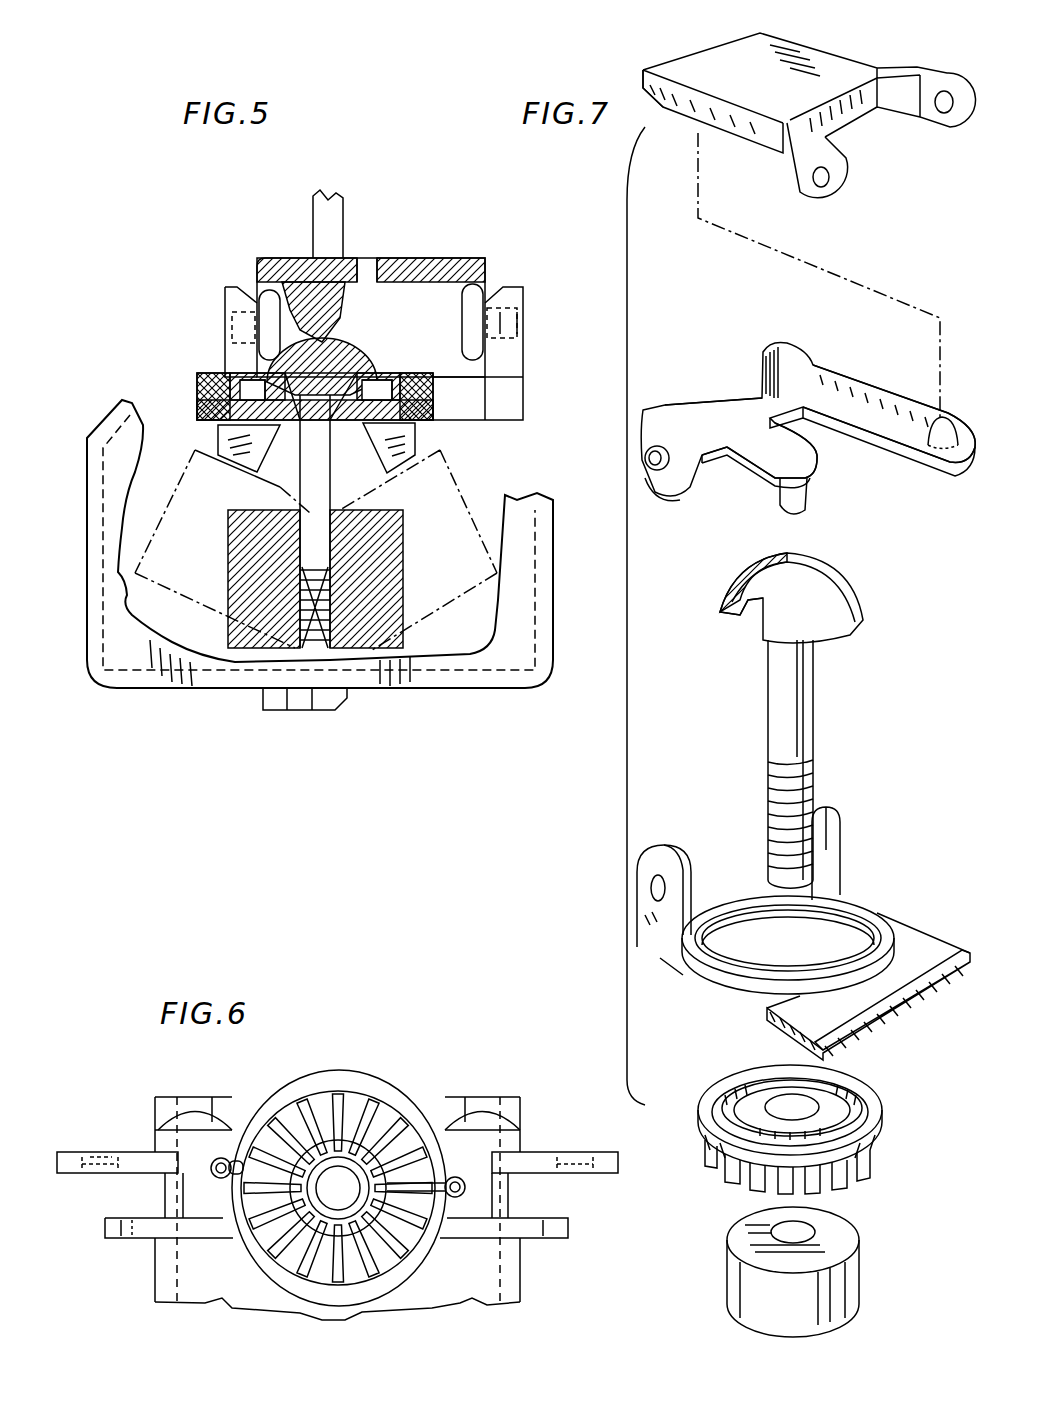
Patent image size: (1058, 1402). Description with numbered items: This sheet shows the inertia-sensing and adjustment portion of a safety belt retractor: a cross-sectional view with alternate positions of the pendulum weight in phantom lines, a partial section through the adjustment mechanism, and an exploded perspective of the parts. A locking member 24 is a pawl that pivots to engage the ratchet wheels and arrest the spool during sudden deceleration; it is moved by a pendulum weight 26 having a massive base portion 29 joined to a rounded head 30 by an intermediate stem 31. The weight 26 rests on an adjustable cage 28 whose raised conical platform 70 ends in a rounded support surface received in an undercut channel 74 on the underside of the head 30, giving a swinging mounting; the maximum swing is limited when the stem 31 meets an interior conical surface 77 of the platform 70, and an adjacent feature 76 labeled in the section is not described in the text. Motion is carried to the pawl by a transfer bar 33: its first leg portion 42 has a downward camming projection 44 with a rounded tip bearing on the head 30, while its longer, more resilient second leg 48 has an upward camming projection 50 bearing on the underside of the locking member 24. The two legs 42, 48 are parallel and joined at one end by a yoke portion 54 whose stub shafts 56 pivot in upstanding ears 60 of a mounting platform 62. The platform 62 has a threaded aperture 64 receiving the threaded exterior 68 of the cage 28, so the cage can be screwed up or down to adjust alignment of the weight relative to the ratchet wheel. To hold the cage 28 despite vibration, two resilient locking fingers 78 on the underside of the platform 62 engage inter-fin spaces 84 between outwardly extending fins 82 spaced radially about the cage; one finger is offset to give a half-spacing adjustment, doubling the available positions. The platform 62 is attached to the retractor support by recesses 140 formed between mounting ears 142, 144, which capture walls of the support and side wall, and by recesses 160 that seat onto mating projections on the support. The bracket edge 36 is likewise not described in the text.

In FIG. 7, the locking member 24 is at (765, 33).
In FIG. 7, the pendulum weight 26 is at (696, 1080).
In FIG. 7, the adjustable cage 28 is at (893, 1111).
In FIG. 5, the base portion 29 is at (405, 617).
In FIG. 7, the base portion 29 is at (850, 1305).
In FIG. 5, the head 30 is at (330, 345).
In FIG. 7, the head 30 is at (825, 595).
In FIG. 5, the stem 31 is at (300, 485).
In FIG. 7, the stem 31 is at (805, 712).
In FIG. 7, the transfer bar 33 is at (854, 375).
In FIG. 7, the bracket edge 36 is at (642, 80).
In FIG. 5, the first leg portion 42 is at (345, 256).
In FIG. 7, the first leg portion 42 is at (775, 465).
In FIG. 5, the camming projection 44 is at (335, 308).
In FIG. 7, the camming projection 44 is at (805, 503).
In FIG. 5, the second leg 48 is at (420, 260).
In FIG. 7, the second leg 48 is at (903, 435).
In FIG. 7, the camming projection 50 is at (937, 417).
In FIG. 7, the yoke portion 54 is at (738, 430).
In FIG. 7, the stub shafts 56 is at (660, 447).
In FIG. 7, the ears 60 is at (675, 857).
In FIG. 7, the mounting platform 62 is at (898, 912).
In FIG. 7, the threaded aperture 64 is at (855, 928).
In FIG. 7, the threaded exterior 68 is at (882, 1135).
In FIG. 7, the raised conical platform 70 is at (835, 1092).
In FIG. 5, the undercut channel 74 is at (240, 385).
In FIG. 7, the undercut channel 74 is at (745, 610).
In FIG. 5, the recess 76 is at (362, 360).
In FIG. 5, the interior conical surface 77 is at (372, 385).
In FIG. 6, the resilient locking fingers 78 is at (221, 1180).
In FIG. 5, the fins 82 is at (222, 440).
In FIG. 6, the fins 82 is at (395, 1110).
In FIG. 7, the inter-fin spaces 84 is at (740, 1192).
In FIG. 6, the recesses 140 is at (130, 1198).
In FIG. 6, the mounting ear 142 is at (58, 1150).
In FIG. 6, the mounting ear 144 is at (113, 1238).
In FIG. 6, the recesses 160 is at (138, 1132).